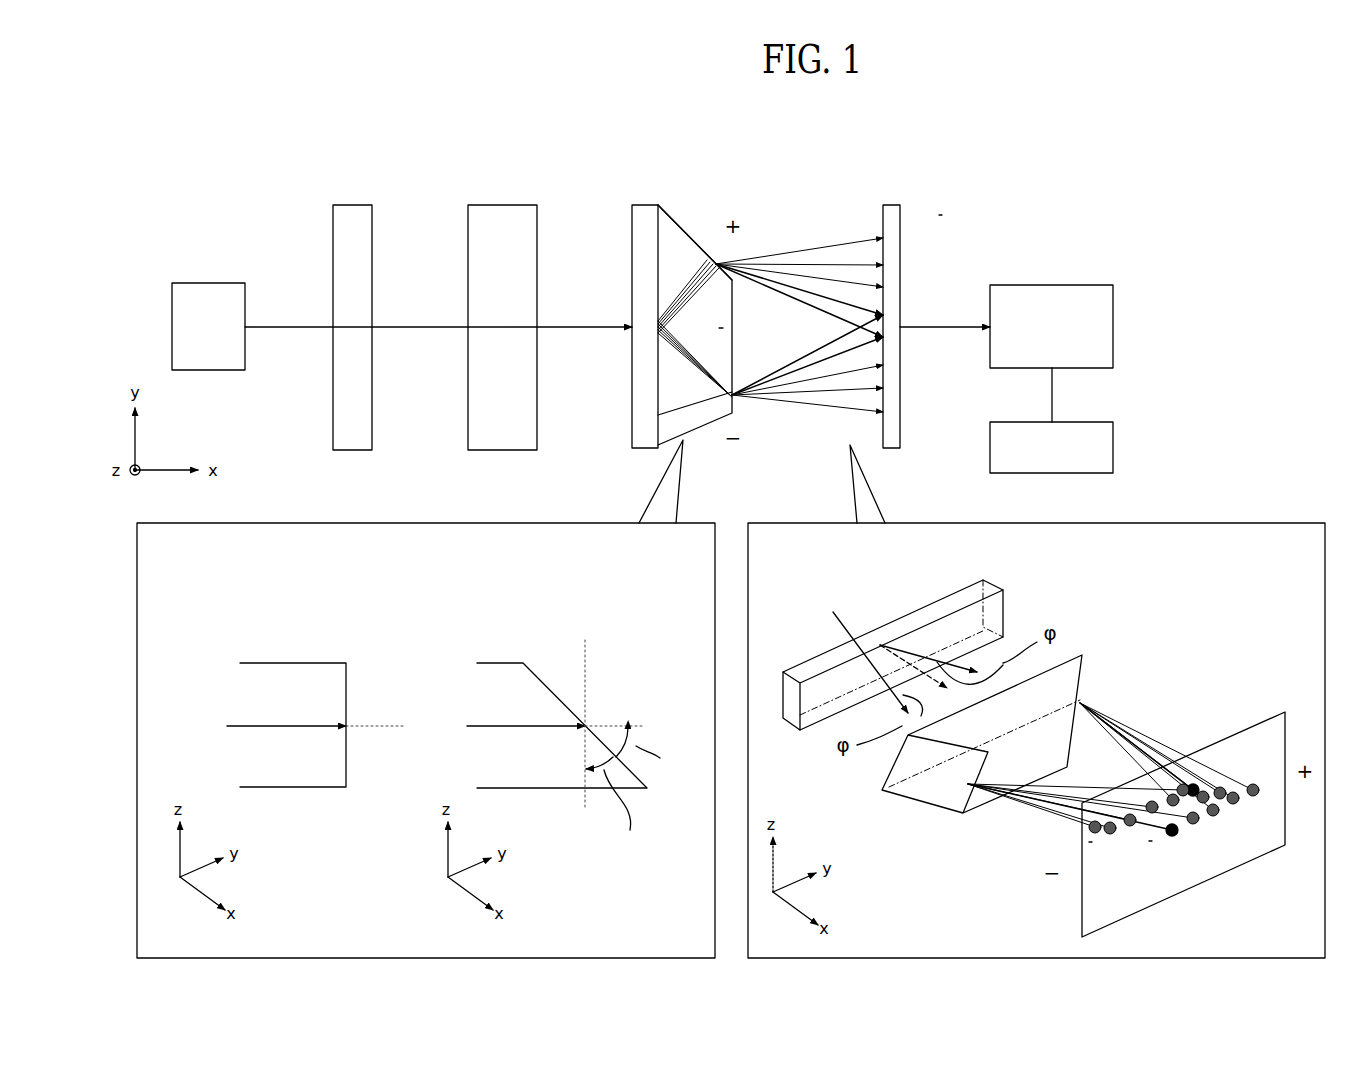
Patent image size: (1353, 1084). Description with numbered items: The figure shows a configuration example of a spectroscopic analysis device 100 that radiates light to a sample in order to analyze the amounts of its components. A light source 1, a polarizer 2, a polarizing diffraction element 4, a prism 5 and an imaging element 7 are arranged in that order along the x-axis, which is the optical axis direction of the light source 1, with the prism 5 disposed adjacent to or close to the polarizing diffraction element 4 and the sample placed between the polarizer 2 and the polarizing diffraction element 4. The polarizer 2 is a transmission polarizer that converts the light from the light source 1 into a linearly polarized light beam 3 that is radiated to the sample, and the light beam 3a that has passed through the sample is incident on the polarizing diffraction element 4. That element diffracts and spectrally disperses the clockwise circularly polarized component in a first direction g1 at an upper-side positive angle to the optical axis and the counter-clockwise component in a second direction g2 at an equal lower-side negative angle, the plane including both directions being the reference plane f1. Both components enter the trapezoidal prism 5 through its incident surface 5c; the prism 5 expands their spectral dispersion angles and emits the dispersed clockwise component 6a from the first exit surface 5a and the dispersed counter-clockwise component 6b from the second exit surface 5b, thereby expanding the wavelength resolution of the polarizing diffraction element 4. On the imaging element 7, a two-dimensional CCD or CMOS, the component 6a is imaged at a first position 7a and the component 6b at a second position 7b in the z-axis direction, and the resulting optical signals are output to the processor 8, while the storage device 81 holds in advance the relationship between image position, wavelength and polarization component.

The light source 1 is at (208, 283).
The polarizer 2 is at (352, 205).
The linearly polarized light beam 3 is at (420, 326).
The light beam 3a is at (578, 326).
The polarizing diffraction element 4 is at (640, 204).
The prism 5 is at (706, 236).
The first exit surface 5a is at (689, 244).
The second exit surface 5b is at (692, 420).
The incident surface 5c is at (669, 246).
The spectrally dispersed clockwise circularly polarized light component 6a is at (829, 240).
The spectrally dispersed counter-clockwise circularly polarized light component 6b is at (818, 413).
The imaging element 7 is at (900, 403).
The first position 7a is at (1150, 841).
The second position 7b is at (1090, 842).
The processor 8 is at (1050, 285).
The storage device 81 is at (1113, 448).
The spectroscopic analysis device 100 is at (940, 215).
The reference plane f1 is at (722, 328).
The first direction g1 is at (933, 665).
The second direction g2 is at (857, 682).